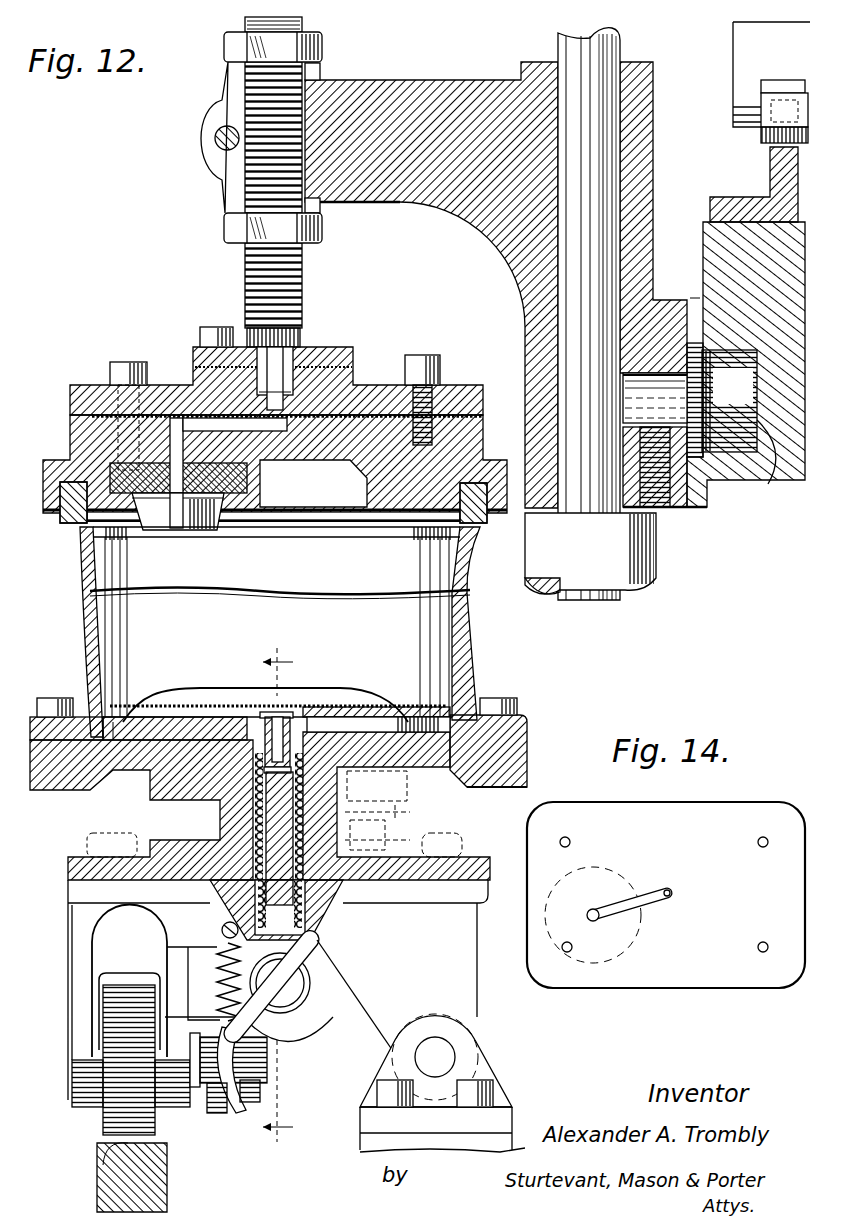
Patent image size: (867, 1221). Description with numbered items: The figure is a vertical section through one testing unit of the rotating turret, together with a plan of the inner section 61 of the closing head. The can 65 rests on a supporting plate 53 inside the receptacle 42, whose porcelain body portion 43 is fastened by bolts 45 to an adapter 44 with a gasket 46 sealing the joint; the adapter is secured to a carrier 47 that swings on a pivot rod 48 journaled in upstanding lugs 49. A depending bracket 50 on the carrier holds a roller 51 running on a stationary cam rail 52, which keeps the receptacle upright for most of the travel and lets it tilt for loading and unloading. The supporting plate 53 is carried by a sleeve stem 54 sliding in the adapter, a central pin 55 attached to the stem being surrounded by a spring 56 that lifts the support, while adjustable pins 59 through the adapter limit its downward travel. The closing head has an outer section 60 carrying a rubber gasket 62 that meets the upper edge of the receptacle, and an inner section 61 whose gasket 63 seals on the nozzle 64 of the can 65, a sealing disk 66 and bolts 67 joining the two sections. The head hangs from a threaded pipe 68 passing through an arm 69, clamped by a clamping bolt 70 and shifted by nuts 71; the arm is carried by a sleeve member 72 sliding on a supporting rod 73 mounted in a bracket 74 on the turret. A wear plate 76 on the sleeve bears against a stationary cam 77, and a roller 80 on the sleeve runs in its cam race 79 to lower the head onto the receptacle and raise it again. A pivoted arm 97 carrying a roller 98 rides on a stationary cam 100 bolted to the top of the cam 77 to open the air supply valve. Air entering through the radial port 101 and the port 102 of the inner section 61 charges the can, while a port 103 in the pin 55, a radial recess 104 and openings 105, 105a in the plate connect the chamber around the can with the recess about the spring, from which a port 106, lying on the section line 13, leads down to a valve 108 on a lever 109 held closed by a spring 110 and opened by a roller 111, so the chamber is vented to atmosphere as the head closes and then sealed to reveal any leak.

In FIG. 12, the section line 13 is at (280, 897).
In FIG. 12, the receptacle 42 is at (467, 557).
In FIG. 12, the body portion 43 is at (466, 620).
In FIG. 12, the adapter 44 is at (470, 787).
In FIG. 12, the bolts 45 is at (497, 698).
In FIG. 12, the gasket 46 is at (523, 733).
In FIG. 12, the carrier 47 is at (433, 892).
In FIG. 12, the pivot rod 48 is at (438, 1053).
In FIG. 12, the upstanding lugs 49 is at (470, 1060).
In FIG. 12, the depending bracket 50 is at (77, 1000).
In FIG. 12, the roller 51 is at (127, 1047).
In FIG. 12, the cam rail 52 is at (110, 1142).
In FIG. 12, the supporting plate 53 is at (198, 722).
In FIG. 12, the sleeve stem 54 is at (253, 822).
In FIG. 12, the central pin 55 is at (225, 905).
In FIG. 12, the spring 56 is at (343, 897).
In FIG. 12, the adjustable pins 59 is at (403, 814).
In FIG. 12, the outer section 60 is at (183, 395).
In FIG. 14, the outer section 60 is at (666, 895).
In FIG. 12, the inner section 61 is at (387, 463).
In FIG. 12, the rubber gasket 62 is at (468, 530).
In FIG. 12, the gasket 63 is at (128, 476).
In FIG. 12, the nozzle 64 is at (177, 517).
In FIG. 12, the can 65 is at (280, 622).
In FIG. 12, the sealing disk 66 is at (358, 414).
In FIG. 12, the bolts 67 is at (440, 367).
In FIG. 12, the pipe 68 is at (247, 267).
In FIG. 12, the arm 69 is at (362, 100).
In FIG. 12, the clamping bolt 70 is at (212, 137).
In FIG. 12, the nuts 71 is at (320, 43).
In FIG. 12, the sleeve member 72 is at (646, 113).
In FIG. 12, the supporting rod 73 is at (581, 58).
In FIG. 12, the bracket 74 is at (643, 545).
In FIG. 12, the wear plate 76 is at (693, 300).
In FIG. 12, the stationary cam 77 is at (726, 240).
In FIG. 12, the cam race 79 is at (771, 480).
In FIG. 12, the roller 80 is at (690, 425).
In FIG. 12, the arm 97 is at (786, 82).
In FIG. 12, the roller 98 is at (760, 140).
In FIG. 12, the stationary cam 100 is at (778, 170).
In FIG. 12, the radial port 101 is at (253, 424).
In FIG. 14, the radial port 101 is at (647, 898).
In FIG. 12, the port 102 is at (177, 440).
In FIG. 14, the port 102 is at (595, 913).
In FIG. 12, the port 103 is at (278, 727).
In FIG. 12, the radial recess 104 is at (355, 720).
In FIG. 12, the opening 105 is at (423, 720).
In FIG. 12, the opening 105a is at (123, 728).
In FIG. 12, the port 106 is at (327, 953).
In FIG. 12, the valve 108 is at (300, 988).
In FIG. 12, the lever 109 is at (273, 1070).
In FIG. 12, the spring 110 is at (217, 970).
In FIG. 12, the roller 111 is at (218, 1118).